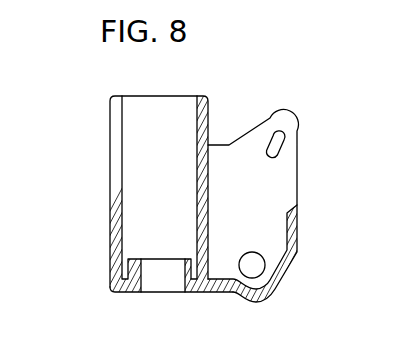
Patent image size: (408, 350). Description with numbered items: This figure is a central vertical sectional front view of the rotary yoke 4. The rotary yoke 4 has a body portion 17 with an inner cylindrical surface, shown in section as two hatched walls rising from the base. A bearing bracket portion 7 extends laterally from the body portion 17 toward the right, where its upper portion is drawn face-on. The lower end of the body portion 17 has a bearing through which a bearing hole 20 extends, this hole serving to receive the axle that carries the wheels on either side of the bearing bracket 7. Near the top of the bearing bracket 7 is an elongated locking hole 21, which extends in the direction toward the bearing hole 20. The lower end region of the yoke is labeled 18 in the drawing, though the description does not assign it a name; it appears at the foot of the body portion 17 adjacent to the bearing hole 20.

The rotary yoke 4 is at (315, 88).
The bearing bracket portion 7 is at (287, 178).
The body portion 17 is at (110, 150).
The bottom end portion 18 is at (123, 291).
The bearing hole 20 is at (262, 272).
The elongated locking hole 21 is at (298, 133).